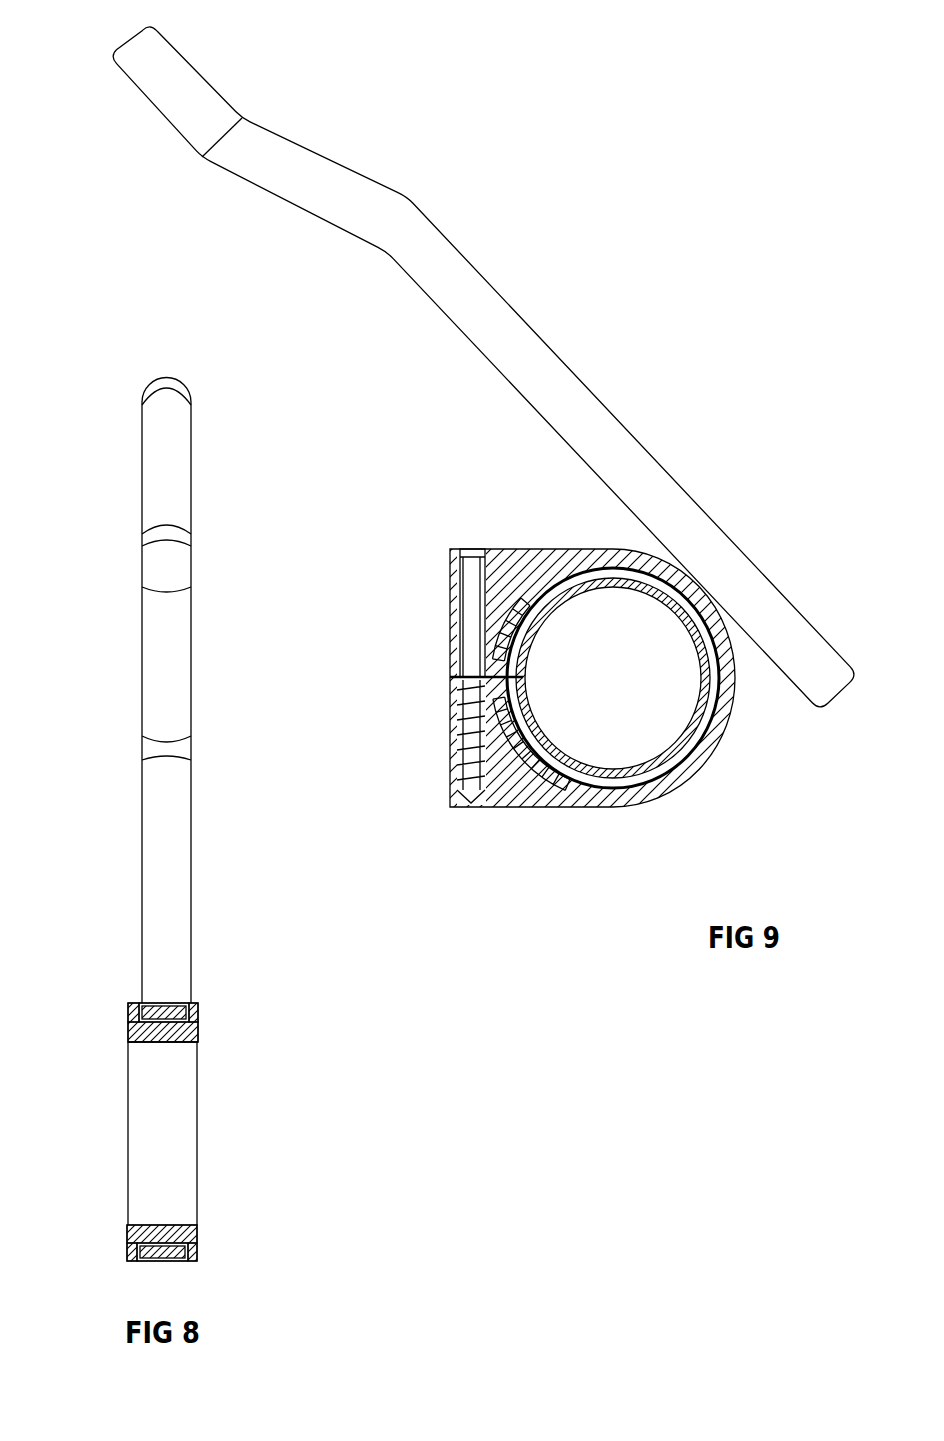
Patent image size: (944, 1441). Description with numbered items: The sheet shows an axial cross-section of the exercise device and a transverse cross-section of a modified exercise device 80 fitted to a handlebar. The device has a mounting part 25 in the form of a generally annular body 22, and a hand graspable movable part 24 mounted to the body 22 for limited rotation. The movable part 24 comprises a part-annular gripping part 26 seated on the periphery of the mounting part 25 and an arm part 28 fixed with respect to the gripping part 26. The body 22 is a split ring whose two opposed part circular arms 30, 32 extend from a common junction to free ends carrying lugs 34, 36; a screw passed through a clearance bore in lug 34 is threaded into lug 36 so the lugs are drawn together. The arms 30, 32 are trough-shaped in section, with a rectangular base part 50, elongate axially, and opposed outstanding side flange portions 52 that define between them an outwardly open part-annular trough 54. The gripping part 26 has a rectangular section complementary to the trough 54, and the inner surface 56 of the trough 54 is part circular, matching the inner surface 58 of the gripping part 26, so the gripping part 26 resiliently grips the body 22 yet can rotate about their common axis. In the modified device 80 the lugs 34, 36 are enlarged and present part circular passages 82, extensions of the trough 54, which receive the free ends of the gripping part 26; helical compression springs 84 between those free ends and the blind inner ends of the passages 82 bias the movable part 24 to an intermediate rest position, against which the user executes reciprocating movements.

In FIG. 9, the annular body 22 is at (483, 808).
In FIG. 8, the annular body 22 is at (198, 1035).
In FIG. 9, the movable part 24 is at (483, 367).
In FIG. 9, the mounting part 25 is at (592, 652).
In FIG. 8, the mounting part 25 is at (189, 1122).
In FIG. 9, the gripping part 26 is at (632, 543).
In FIG. 8, the gripping part 26 is at (166, 1270).
In FIG. 9, the arm part 28 is at (522, 322).
In FIG. 8, the arm part 28 is at (157, 628).
In FIG. 8, the part circular arm 30 is at (163, 1042).
In FIG. 8, the part circular arm 32 is at (148, 1223).
In FIG. 9, the lug 34 is at (450, 618).
In FIG. 9, the lug 36 is at (530, 795).
In FIG. 8, the base part 50 is at (173, 1030).
In FIG. 8, the side flange portions 52 is at (128, 1017).
In FIG. 8, the trough 54 is at (198, 1007).
In FIG. 8, the inner surface of trough 56 is at (128, 1042).
In FIG. 8, the inner surface of gripping part 58 is at (147, 1005).
In FIG. 9, the modified exercise device 80 is at (550, 652).
In FIG. 9, the part circular passages 82 is at (543, 578).
In FIG. 9, the helical compression springs 84 is at (518, 633).